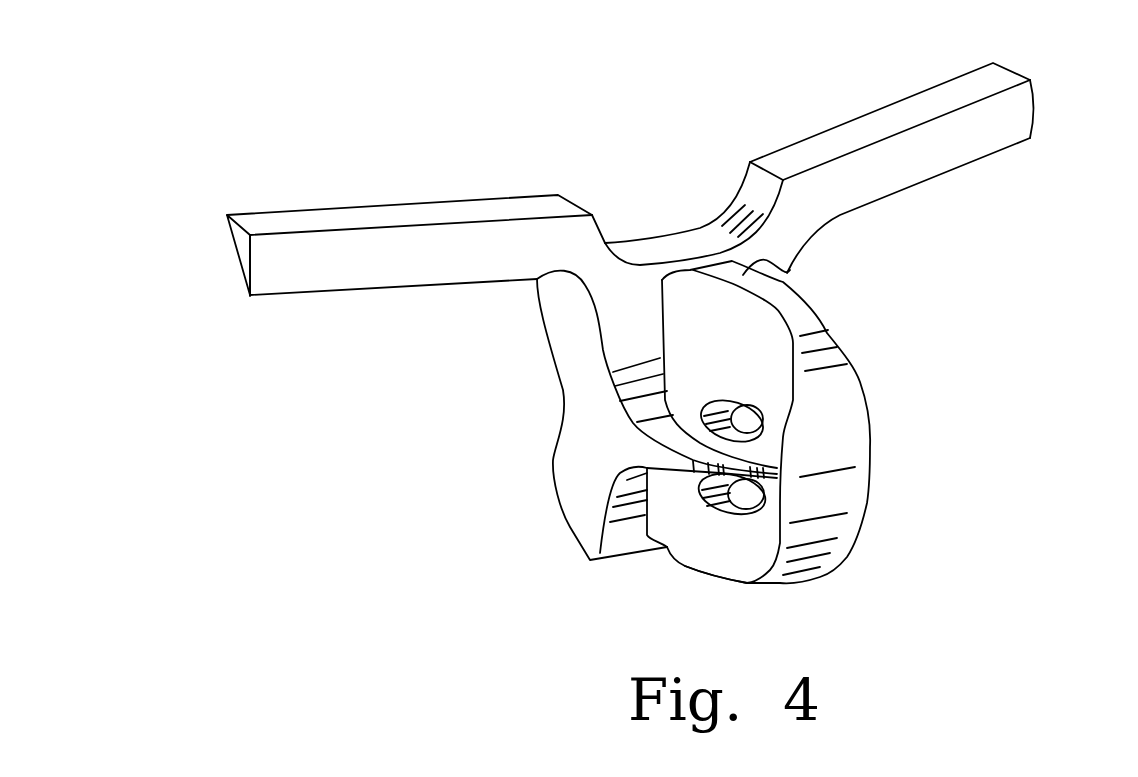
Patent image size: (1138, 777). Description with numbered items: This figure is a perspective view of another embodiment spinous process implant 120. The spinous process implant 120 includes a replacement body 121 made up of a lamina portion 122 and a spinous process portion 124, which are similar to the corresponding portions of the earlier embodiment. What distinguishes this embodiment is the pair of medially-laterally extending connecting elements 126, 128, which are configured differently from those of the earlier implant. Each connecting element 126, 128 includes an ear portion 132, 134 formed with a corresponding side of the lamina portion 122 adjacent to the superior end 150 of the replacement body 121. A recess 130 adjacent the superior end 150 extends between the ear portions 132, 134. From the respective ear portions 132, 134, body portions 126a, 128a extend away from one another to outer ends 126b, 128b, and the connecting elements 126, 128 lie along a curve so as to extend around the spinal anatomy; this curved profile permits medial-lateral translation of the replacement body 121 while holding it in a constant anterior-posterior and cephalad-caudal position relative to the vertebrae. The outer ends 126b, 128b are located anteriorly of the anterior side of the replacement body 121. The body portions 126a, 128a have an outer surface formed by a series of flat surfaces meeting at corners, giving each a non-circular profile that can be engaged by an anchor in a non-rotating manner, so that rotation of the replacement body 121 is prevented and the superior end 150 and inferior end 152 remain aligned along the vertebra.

The spinous process implant 120 is at (924, 332).
The replacement body 121 is at (872, 382).
The lamina portion 122 is at (556, 445).
The spinous process portion 124 is at (860, 448).
The connecting element 126 is at (373, 215).
The body portion 126a is at (327, 284).
The outer end 126b is at (237, 248).
The connecting element 128 is at (997, 80).
The body portion 128a is at (863, 132).
The outer end 128b is at (1034, 107).
The recess 130 is at (678, 233).
The ear portion 132 is at (587, 270).
The ear portion 134 is at (810, 212).
The superior end 150 is at (790, 270).
The inferior end 152 is at (697, 572).